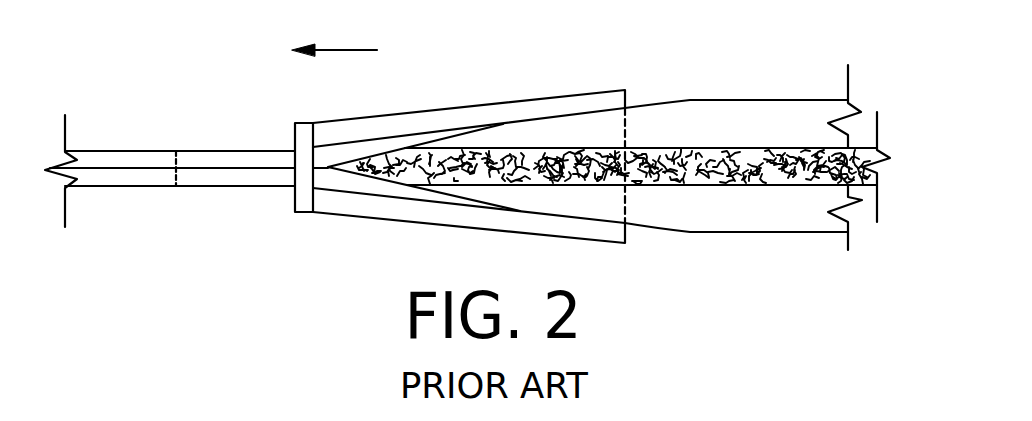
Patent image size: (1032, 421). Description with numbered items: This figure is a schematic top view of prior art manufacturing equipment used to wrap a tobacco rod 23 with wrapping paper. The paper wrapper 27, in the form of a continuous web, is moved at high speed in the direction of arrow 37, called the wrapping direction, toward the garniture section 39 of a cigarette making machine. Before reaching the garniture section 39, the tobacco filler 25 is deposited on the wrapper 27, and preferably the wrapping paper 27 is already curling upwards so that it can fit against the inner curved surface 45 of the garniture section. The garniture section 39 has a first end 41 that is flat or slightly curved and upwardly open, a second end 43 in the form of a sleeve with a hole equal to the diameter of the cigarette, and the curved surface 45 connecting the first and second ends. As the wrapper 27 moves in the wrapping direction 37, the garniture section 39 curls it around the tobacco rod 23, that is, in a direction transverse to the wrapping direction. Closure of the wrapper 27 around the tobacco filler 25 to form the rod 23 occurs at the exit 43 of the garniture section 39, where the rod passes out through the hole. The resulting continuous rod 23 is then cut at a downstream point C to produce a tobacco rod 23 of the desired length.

The tobacco rod 23 is at (100, 151).
The downstream cutting point C is at (176, 140).
The second end 43 is at (294, 128).
The wrapping direction arrow 37 is at (334, 36).
The garniture section 39 is at (477, 103).
The curved surface 45 is at (557, 105).
The first end 41 is at (628, 93).
The paper wrapper 27 is at (767, 117).
The tobacco filler 25 is at (866, 156).